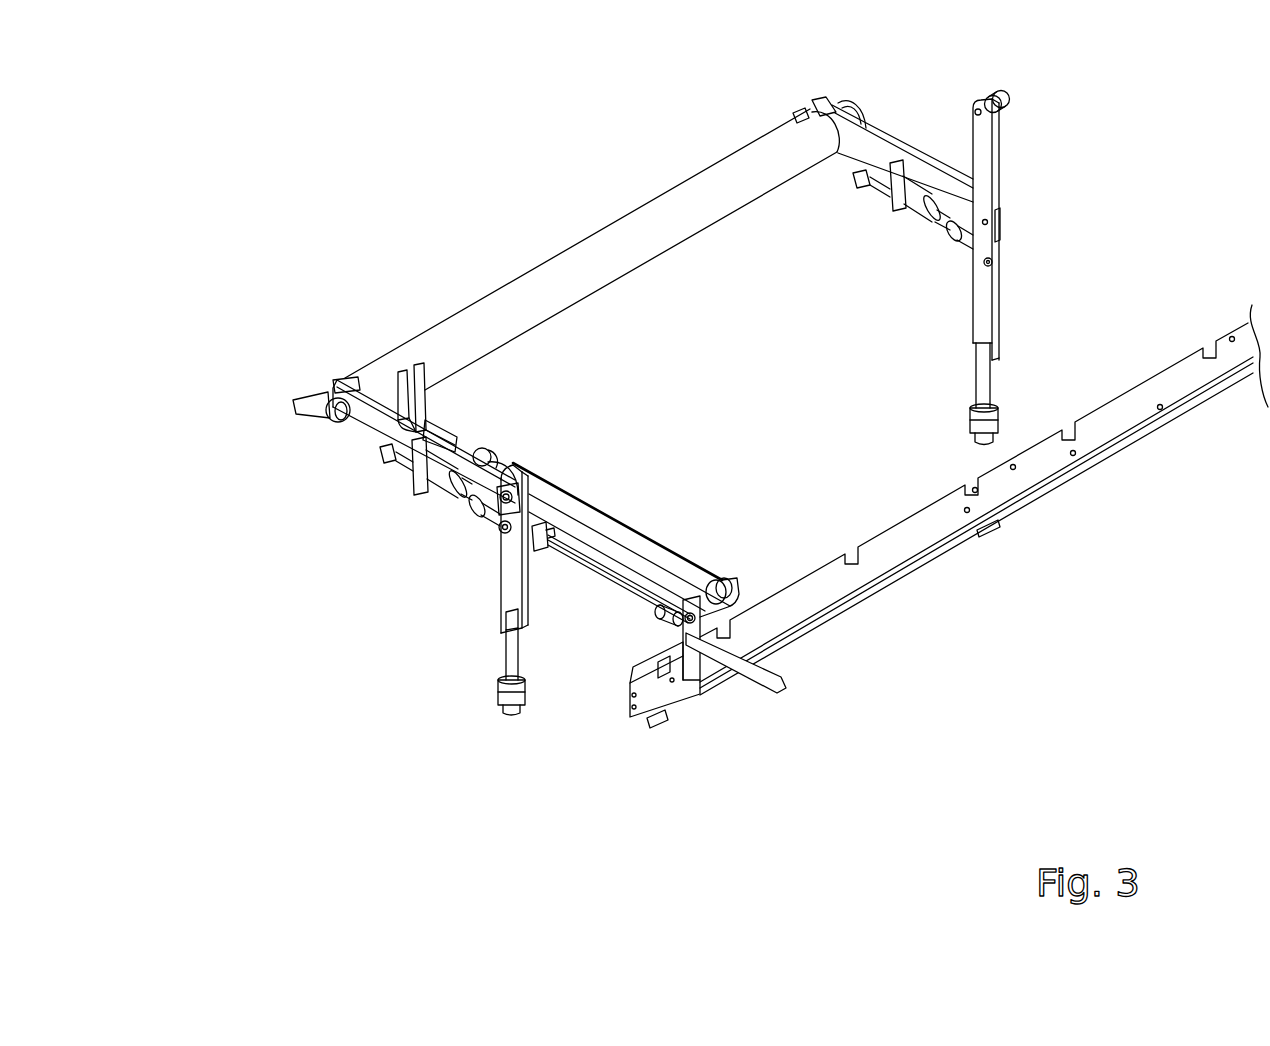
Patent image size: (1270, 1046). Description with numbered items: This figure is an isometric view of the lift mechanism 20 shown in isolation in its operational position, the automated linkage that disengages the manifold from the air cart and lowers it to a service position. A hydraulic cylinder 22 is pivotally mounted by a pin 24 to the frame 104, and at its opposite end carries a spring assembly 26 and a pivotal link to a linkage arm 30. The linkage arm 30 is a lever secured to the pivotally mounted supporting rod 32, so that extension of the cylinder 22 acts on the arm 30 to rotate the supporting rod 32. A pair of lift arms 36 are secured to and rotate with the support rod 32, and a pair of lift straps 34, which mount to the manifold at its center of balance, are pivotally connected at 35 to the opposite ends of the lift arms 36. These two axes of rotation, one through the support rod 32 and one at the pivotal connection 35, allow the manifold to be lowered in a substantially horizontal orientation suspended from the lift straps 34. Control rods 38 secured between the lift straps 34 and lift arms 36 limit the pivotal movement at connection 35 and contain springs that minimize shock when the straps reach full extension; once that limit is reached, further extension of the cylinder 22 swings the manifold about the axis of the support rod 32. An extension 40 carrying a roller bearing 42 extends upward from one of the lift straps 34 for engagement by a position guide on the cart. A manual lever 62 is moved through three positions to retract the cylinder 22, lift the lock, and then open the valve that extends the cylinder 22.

The lift mechanism 20 is at (320, 757).
The hydraulic cylinder 22 is at (586, 562).
The pin 24 is at (688, 622).
The spring assembly 26 is at (487, 453).
The linkage arm 30 is at (420, 403).
The supporting rod 32 is at (493, 317).
The lift straps 34 is at (988, 300).
The pivotal connection 35 is at (507, 462).
The lift arms 36 is at (367, 424).
The control rods 38 is at (440, 494).
The extension 40 is at (985, 176).
The roller bearing 42 is at (1008, 98).
The manual lever 62 is at (748, 680).
The frame 104 is at (910, 537).